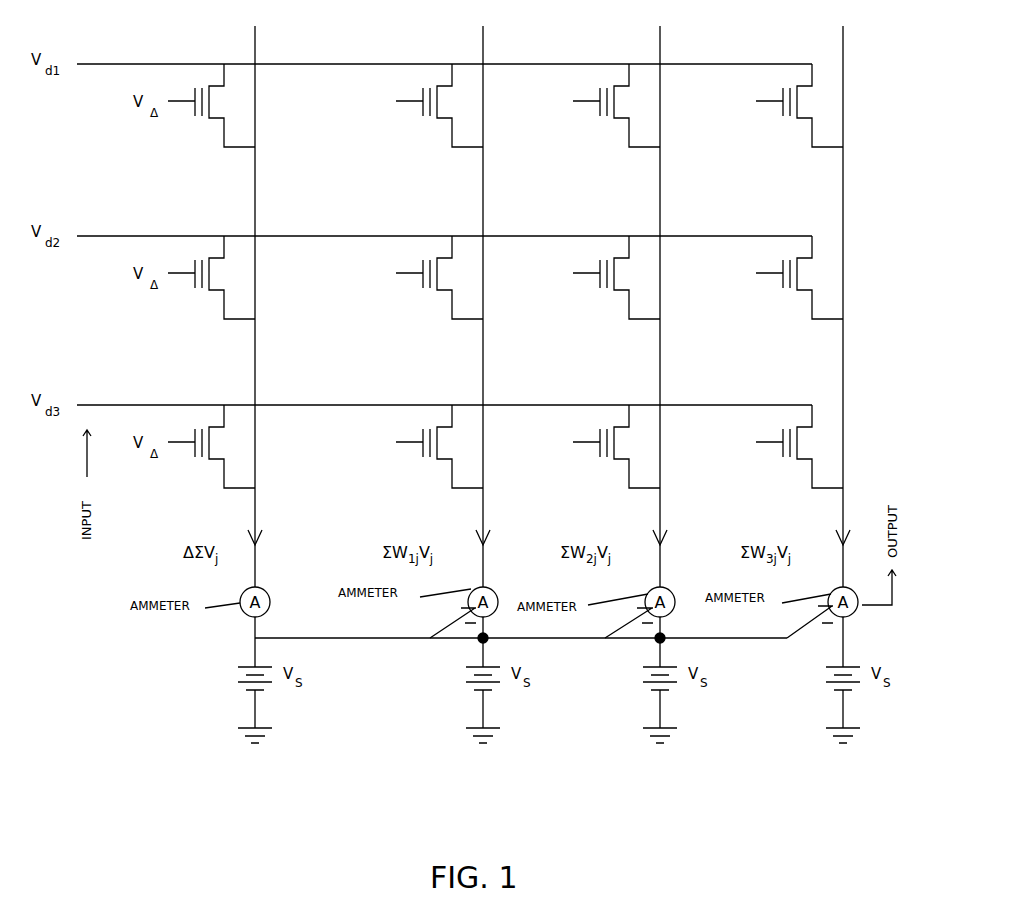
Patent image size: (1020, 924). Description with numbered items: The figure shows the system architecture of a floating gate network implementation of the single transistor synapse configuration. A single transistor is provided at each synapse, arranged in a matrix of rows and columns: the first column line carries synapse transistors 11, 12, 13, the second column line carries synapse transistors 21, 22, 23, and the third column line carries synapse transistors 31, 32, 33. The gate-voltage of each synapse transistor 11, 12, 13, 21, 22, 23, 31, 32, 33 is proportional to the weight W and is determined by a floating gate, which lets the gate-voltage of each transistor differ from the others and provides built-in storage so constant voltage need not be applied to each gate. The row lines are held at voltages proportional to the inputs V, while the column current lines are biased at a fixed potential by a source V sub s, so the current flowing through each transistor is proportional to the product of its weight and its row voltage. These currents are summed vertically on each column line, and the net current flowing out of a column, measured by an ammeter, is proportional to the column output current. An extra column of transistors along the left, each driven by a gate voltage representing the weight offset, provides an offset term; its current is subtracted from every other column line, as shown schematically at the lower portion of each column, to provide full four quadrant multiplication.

The synaptic transistor (row 1, column 1) 11 is at (425, 105).
The synaptic transistor (row 2, column 1) 12 is at (425, 277).
The synaptic transistor (row 3, column 1) 13 is at (425, 446).
The synaptic transistor (row 1, column 2) 21 is at (602, 105).
The synaptic transistor (row 2, column 2) 22 is at (602, 277).
The synaptic transistor (row 3, column 2) 23 is at (602, 446).
The synaptic transistor (row 1, column 3) 31 is at (785, 105).
The synaptic transistor (row 2, column 3) 32 is at (785, 277).
The synaptic transistor (row 3, column 3) 33 is at (785, 446).